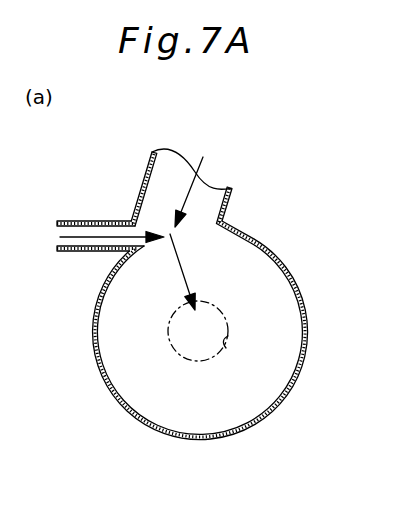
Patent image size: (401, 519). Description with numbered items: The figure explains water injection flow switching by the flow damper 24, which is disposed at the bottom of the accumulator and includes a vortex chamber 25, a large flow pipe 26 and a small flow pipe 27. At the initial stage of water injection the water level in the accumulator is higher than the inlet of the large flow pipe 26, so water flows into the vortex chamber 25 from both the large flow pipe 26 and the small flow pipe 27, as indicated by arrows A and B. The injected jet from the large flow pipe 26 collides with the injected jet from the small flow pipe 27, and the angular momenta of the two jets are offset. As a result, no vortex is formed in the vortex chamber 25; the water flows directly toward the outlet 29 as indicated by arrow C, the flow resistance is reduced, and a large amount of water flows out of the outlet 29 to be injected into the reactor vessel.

The flow damper 24 is at (292, 160).
The vortex chamber 25 is at (115, 398).
The large flow pipe 26 is at (233, 190).
The small flow pipe 27 is at (58, 221).
The outlet 29 is at (228, 333).
The arrow A is at (190, 188).
The arrow B is at (93, 238).
The arrow C is at (183, 272).